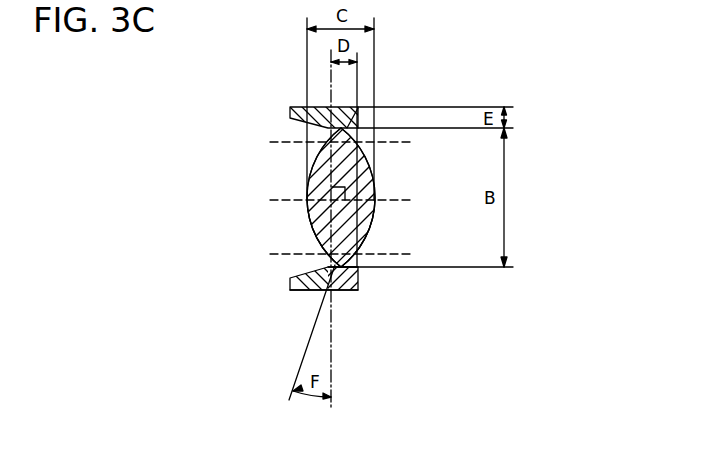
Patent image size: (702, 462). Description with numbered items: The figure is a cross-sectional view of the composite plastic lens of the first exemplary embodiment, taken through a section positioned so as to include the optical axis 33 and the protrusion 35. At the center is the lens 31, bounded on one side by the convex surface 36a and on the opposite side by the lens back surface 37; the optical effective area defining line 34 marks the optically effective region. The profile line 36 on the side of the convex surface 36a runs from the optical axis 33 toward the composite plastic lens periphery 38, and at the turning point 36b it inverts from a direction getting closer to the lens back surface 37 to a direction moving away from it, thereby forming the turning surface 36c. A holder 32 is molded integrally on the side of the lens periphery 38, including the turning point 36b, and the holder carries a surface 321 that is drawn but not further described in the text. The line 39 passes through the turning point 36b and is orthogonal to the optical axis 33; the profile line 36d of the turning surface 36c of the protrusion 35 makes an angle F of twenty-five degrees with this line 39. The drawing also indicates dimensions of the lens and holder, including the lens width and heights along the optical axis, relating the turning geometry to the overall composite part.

The lens 31 is at (318, 172).
The holder 32 is at (288, 110).
The inclined surface of upper flange 321 is at (360, 113).
The optical axis 33 is at (282, 198).
The optical effective area defining line 34 is at (282, 254).
The protrusion 35 is at (358, 279).
The profile line 36 is at (307, 206).
The convex surface 36a is at (308, 228).
The turning point 36b is at (367, 238).
The turning surface 36c is at (320, 290).
The profile line 36d is at (300, 368).
The lens back surface 37 is at (370, 208).
The composite plastic lens periphery 38 is at (338, 290).
The surface passing through the turning point and orthogonal to the optical axis 39 is at (332, 88).